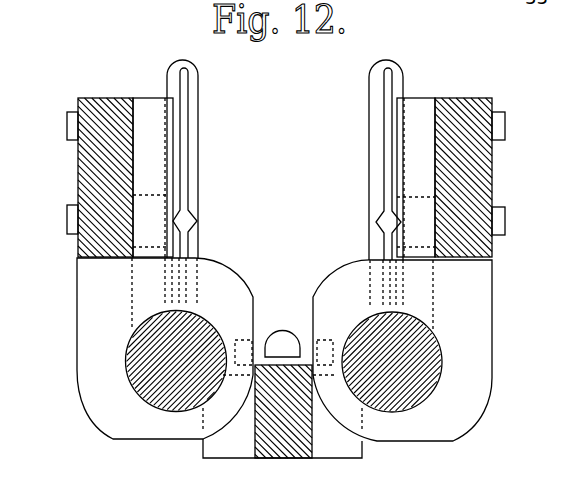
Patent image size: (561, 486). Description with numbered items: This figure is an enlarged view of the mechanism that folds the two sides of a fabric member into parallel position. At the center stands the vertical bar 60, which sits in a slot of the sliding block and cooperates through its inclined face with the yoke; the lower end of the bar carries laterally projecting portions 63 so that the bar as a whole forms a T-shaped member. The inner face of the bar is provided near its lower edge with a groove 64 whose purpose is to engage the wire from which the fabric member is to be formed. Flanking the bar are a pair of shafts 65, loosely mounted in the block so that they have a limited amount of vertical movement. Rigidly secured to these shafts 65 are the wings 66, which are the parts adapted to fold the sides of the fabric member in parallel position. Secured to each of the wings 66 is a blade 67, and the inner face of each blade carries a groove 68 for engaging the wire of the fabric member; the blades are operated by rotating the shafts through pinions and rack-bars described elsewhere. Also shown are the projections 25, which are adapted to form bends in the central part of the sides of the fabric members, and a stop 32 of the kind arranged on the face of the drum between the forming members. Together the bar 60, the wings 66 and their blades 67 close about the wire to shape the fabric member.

The projections 25 is at (198, 222).
The stops 32 is at (292, 321).
The vertical bar 60 is at (298, 450).
The laterally projecting portions 63 is at (282, 443).
The groove 64 is at (318, 370).
The shafts 65 is at (142, 388).
The wings 66 is at (78, 170).
The blade 67 is at (284, 177).
The groove 68 is at (286, 160).